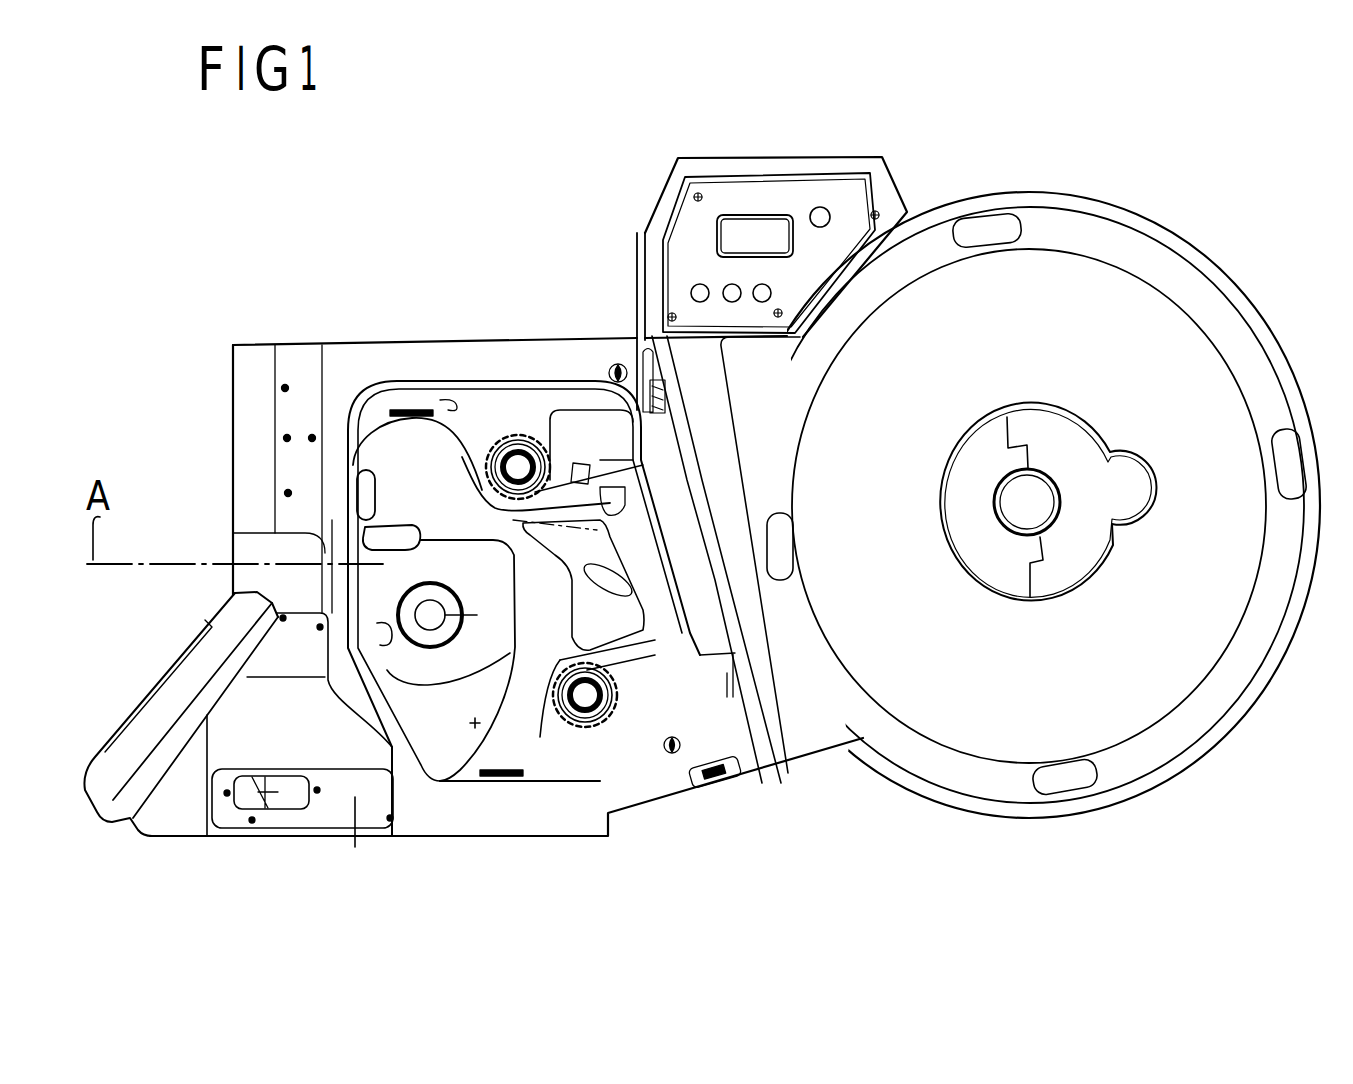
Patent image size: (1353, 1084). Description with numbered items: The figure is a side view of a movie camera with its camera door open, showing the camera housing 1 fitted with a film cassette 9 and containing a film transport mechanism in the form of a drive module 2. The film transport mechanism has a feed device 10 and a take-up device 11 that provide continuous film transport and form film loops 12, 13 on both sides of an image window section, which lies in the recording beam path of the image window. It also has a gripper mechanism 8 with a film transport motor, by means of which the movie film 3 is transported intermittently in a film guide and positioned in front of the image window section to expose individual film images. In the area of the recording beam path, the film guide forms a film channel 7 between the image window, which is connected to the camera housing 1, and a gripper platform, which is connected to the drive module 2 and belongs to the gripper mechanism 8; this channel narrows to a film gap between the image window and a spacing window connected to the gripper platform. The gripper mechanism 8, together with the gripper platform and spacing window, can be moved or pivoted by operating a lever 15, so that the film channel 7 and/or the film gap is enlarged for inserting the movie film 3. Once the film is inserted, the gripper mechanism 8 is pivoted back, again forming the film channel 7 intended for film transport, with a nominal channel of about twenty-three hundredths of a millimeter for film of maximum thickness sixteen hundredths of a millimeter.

The camera housing 1 is at (512, 330).
The drive module 2 is at (592, 767).
The movie film 3 is at (380, 382).
The film channel 7 is at (353, 513).
The gripper mechanism 8 is at (448, 723).
The film cassette 9 is at (1122, 237).
The feed device 10 is at (610, 740).
The take-up device 11 is at (523, 432).
The film loop 12 is at (383, 412).
The film loop 13 is at (512, 767).
The lever 15 is at (403, 533).